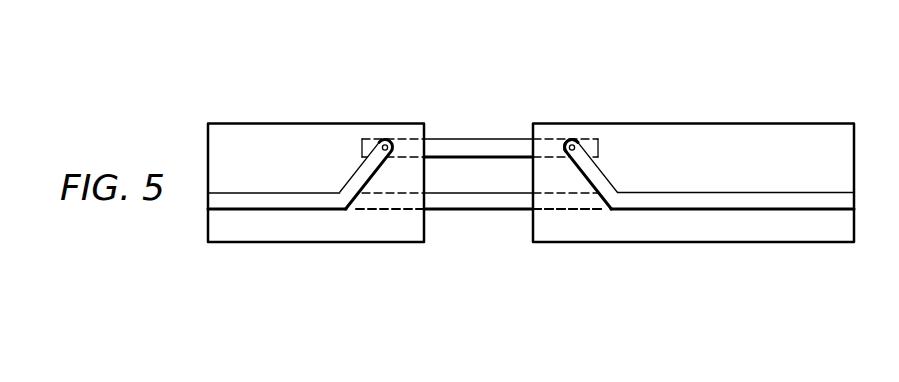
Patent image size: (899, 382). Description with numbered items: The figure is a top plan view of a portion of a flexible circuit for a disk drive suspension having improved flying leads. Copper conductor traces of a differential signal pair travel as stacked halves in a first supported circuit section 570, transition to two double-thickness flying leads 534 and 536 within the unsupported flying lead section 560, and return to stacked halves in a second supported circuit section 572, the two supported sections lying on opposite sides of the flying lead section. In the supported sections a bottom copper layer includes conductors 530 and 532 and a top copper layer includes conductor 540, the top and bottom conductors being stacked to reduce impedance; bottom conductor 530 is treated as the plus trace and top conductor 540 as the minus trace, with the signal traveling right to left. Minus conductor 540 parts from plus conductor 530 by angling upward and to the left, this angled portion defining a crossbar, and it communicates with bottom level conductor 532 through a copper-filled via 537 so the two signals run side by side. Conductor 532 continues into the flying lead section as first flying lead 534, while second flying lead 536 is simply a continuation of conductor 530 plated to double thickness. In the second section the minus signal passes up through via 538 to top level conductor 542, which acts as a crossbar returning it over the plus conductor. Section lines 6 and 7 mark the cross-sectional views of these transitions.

The bottom copper conductor 530 is at (572, 211).
The bottom level conductor 532 is at (550, 138).
The first flying lead 534 is at (430, 138).
The second flying lead 536 is at (450, 192).
The via 537 is at (582, 139).
The via 538 is at (393, 130).
The top copper conductor 540 is at (608, 180).
The top level copper conductor 542 is at (352, 177).
The flying lead section 560 is at (533, 290).
The first supported circuit section 570 is at (854, 290).
The second supported circuit section 572 is at (208, 290).
The section line 6- 6 is at (658, 255).
The section line 7- 7 is at (482, 100).